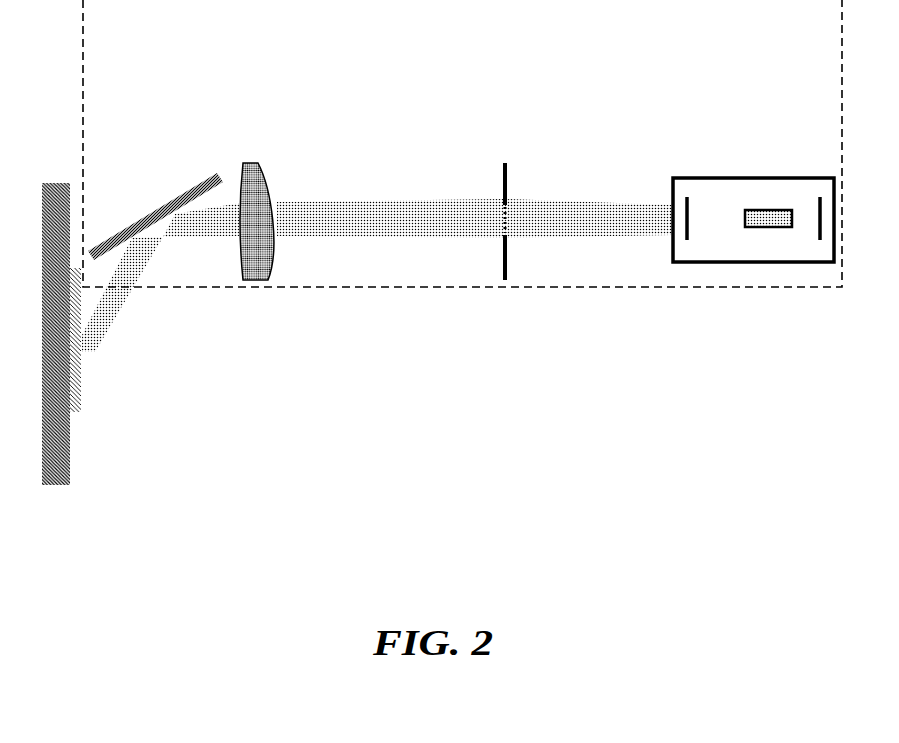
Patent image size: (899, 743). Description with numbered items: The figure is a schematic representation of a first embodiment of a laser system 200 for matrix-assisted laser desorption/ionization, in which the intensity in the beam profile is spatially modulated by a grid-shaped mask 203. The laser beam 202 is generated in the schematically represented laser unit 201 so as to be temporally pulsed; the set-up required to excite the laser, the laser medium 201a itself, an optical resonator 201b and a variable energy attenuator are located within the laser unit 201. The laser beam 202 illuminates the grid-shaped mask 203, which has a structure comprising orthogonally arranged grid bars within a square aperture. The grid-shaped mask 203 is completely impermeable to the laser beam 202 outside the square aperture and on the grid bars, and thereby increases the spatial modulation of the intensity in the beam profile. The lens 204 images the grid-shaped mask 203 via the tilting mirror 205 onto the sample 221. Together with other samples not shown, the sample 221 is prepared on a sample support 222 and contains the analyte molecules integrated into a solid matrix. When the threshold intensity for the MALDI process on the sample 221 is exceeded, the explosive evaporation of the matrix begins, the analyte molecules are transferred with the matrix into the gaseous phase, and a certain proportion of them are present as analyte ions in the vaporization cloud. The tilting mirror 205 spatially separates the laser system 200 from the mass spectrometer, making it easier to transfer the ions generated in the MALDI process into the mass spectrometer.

The laser system 200 is at (425, 289).
The laser unit 201 is at (785, 152).
The laser medium 201a is at (748, 202).
The optical resonator 201b is at (817, 244).
The laser beam 202 is at (637, 194).
The grid-shaped mask 203 is at (505, 154).
The lens 204 is at (252, 154).
The tilting mirror 205 is at (152, 189).
The sample 221 is at (91, 395).
The sample support 222 is at (73, 482).